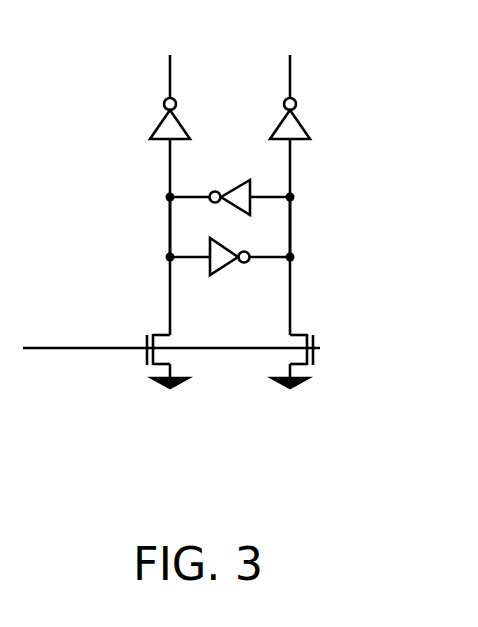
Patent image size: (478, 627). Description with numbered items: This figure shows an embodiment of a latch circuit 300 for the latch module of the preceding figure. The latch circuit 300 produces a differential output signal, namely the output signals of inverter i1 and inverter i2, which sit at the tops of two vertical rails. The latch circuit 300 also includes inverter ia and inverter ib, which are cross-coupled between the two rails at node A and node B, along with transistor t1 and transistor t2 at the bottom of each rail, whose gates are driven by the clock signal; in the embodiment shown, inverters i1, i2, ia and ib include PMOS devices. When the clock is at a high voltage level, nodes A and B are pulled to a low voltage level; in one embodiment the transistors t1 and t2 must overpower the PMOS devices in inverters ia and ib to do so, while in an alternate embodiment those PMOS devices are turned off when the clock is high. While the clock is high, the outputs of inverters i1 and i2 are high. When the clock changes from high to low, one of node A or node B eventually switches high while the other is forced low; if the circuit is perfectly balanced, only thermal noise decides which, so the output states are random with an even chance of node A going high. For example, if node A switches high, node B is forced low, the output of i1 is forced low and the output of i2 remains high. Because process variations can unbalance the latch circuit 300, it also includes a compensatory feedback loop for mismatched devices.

The latch circuit 300 is at (245, 200).
The inverter i1 is at (163, 118).
The inverter i2 is at (300, 118).
The inverter ia is at (230, 251).
The inverter ib is at (230, 192).
The transistor t1 is at (155, 357).
The transistor t2 is at (309, 357).
The node A is at (155, 227).
The node B is at (306, 227).
The clock signal clock is at (171, 337).